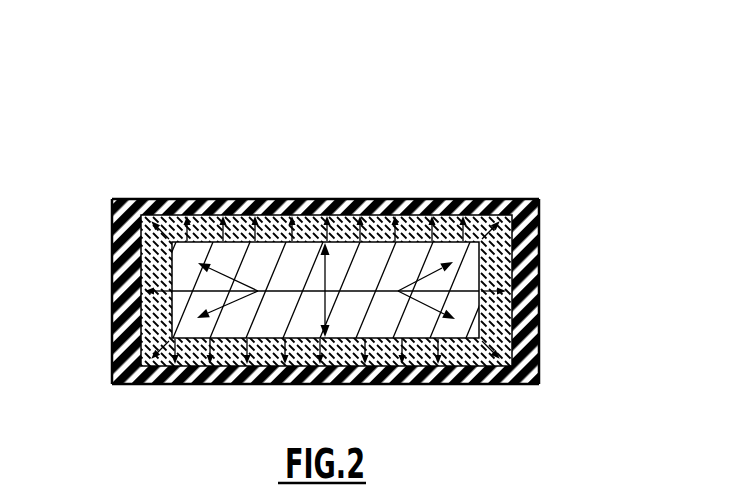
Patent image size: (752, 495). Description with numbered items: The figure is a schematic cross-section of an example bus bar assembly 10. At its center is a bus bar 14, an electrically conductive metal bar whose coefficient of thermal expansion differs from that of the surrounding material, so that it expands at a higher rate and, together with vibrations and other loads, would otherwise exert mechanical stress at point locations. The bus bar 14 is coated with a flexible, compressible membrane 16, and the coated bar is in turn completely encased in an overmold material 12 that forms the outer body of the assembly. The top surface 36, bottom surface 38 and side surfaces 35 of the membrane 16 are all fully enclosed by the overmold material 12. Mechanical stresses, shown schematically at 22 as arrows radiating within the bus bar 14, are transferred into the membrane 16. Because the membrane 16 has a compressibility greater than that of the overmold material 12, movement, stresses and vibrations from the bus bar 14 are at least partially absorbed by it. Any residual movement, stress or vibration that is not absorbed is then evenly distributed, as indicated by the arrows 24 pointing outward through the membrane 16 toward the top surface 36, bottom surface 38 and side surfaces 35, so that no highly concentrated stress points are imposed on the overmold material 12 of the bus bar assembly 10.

The bus bar assembly 10 is at (361, 273).
The overmold material 12 is at (319, 288).
The bus bar 14 is at (370, 263).
The membrane 16 is at (539, 307).
The mechanical stresses 22 is at (245, 290).
The arrows 24 is at (482, 217).
The side surfaces 35 is at (129, 315).
The top surface 36 is at (237, 191).
The bottom surface 38 is at (265, 376).